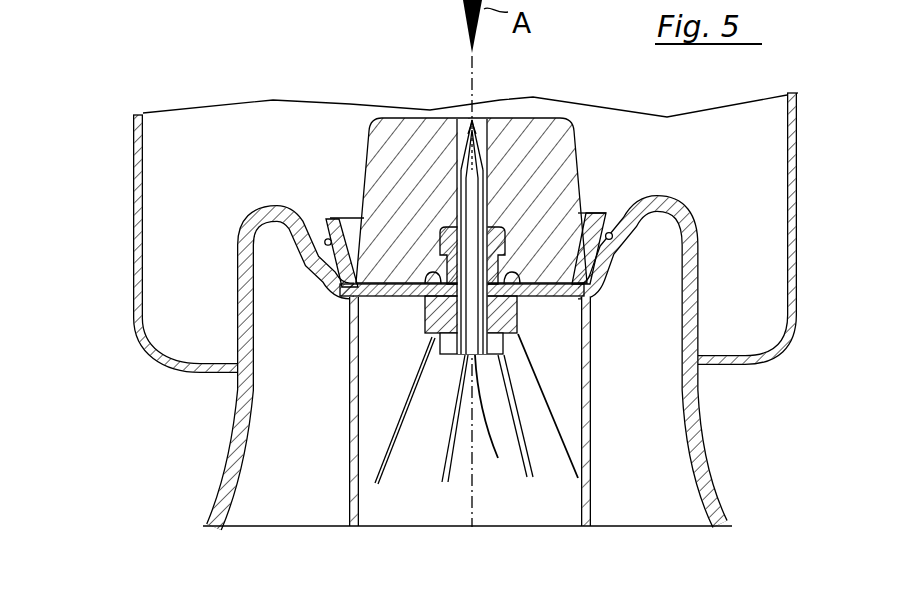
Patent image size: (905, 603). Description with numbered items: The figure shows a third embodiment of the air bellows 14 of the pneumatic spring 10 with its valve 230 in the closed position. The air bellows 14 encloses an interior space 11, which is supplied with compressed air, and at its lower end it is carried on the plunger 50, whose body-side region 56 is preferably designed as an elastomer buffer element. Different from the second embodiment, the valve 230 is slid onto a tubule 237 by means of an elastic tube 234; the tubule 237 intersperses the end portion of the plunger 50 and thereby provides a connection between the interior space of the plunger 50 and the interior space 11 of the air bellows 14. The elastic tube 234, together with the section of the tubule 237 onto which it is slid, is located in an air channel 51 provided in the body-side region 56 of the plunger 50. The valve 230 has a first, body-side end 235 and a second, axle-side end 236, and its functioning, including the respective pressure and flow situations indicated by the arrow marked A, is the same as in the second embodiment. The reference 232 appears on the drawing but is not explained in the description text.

The pneumatic spring 10 is at (150, 93).
The interior space 11 is at (757, 187).
The air bellows 14 is at (790, 122).
The plunger 50 is at (698, 445).
The air channel 51 is at (482, 127).
The body-side region 56 is at (563, 185).
The valve 230 is at (437, 218).
The needle channel 232 is at (458, 170).
The elastic tube 234 is at (452, 175).
The first, body-side end 235 is at (463, 128).
The second, axle-side end 236 is at (455, 193).
The tubule 237 is at (476, 414).